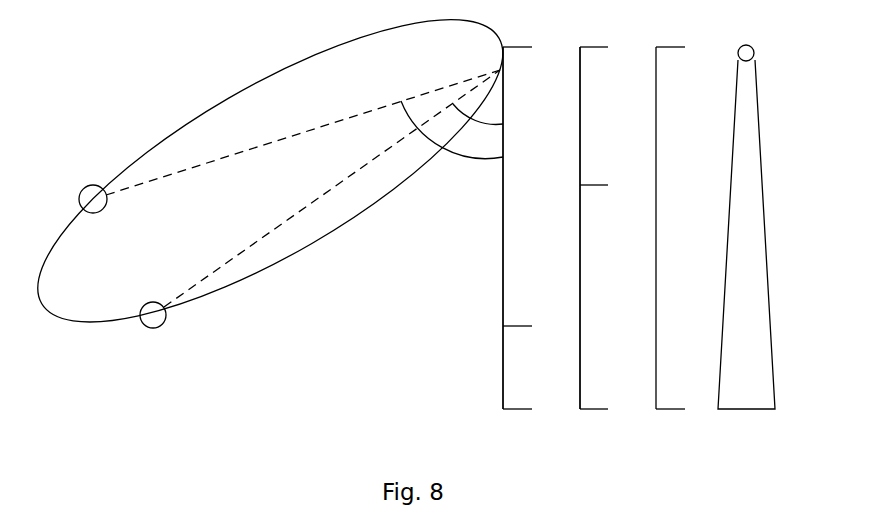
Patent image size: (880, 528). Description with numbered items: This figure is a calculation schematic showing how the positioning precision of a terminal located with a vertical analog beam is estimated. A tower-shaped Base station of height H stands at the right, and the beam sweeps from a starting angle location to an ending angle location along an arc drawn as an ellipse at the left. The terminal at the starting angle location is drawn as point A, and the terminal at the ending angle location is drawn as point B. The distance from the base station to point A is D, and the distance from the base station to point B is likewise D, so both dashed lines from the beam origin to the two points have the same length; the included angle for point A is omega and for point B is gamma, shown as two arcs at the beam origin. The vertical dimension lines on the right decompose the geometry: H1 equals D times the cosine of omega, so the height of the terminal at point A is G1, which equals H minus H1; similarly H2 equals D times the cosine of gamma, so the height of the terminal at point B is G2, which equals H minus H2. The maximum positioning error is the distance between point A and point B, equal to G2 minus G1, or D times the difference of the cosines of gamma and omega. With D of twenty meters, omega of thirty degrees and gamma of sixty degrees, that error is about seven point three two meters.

The point A is at (151, 327).
The point B is at (89, 185).
The distance between terminal point and base station D is at (303, 188).
The vertical projection of distance to point A H1 is at (520, 186).
The height of terminal at point A G1 is at (520, 367).
The vertical projection of distance to point B H2 is at (598, 116).
The height of terminal at point B G2 is at (598, 297).
The height of the base station H is at (670, 228).
The base station Base station is at (746, 227).